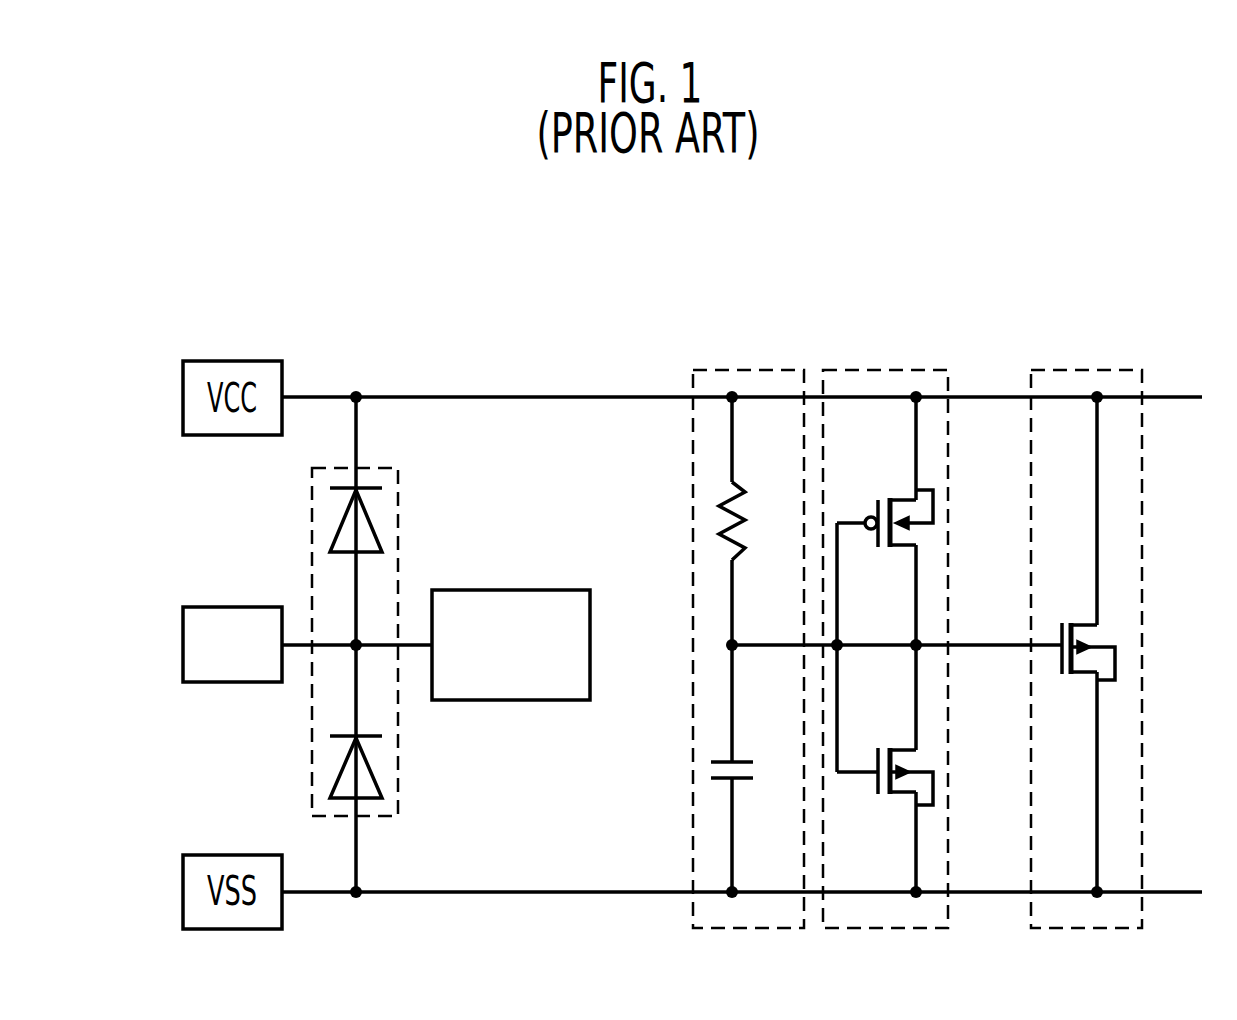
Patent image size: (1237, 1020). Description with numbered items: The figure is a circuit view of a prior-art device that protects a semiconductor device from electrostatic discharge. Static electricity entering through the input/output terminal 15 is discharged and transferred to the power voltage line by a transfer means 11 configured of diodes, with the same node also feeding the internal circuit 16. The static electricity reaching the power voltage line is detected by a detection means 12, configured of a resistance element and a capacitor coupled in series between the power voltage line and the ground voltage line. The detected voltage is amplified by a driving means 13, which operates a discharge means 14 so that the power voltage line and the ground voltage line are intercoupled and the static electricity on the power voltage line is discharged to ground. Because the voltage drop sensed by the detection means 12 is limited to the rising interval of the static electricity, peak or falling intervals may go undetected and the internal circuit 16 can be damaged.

The transfer means 11 is at (398, 521).
The detection means 12 is at (750, 370).
The driving means 13 is at (885, 370).
The discharge means 14 is at (1085, 370).
The input/output terminal 15 is at (233, 605).
The internal circuit 16 is at (530, 590).